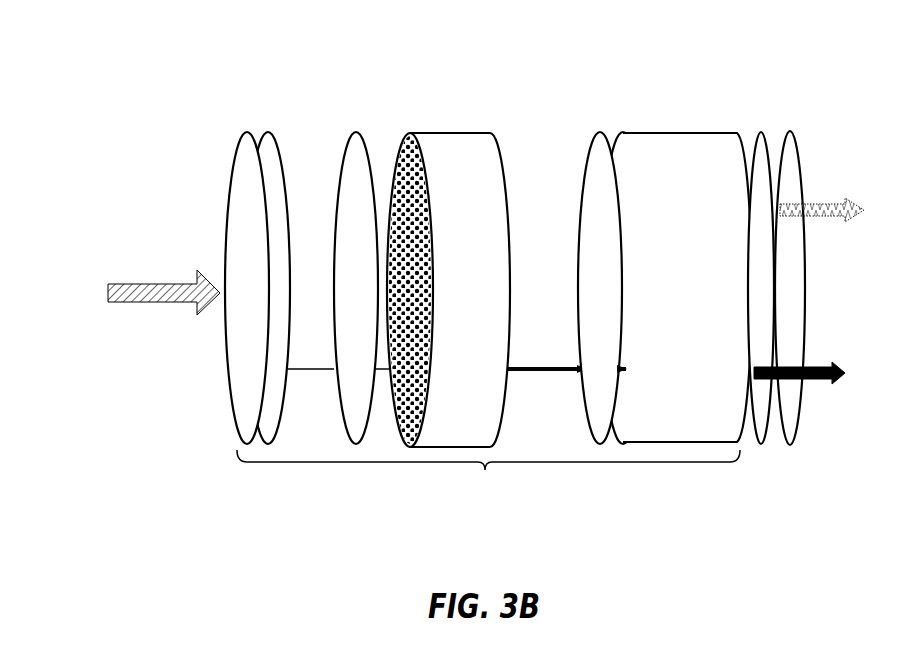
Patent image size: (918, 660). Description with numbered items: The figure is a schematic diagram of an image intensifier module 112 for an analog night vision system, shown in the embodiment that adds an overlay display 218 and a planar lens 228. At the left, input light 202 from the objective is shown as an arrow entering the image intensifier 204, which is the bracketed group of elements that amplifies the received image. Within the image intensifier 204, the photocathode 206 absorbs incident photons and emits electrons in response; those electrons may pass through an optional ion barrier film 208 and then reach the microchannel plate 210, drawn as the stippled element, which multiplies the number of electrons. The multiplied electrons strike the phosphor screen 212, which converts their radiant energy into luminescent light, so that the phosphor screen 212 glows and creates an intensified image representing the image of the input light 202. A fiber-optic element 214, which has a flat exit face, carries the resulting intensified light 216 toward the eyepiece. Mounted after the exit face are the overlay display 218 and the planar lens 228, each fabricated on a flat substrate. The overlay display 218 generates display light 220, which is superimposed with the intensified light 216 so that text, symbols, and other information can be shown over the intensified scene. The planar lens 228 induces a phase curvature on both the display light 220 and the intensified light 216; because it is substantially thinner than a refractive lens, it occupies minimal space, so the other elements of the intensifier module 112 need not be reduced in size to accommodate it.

The image intensifier module 112 is at (258, 61).
The input light 202 is at (134, 279).
The image intensifier 204 is at (498, 510).
The photocathode 206 is at (229, 217).
The ion barrier film 208 is at (340, 162).
The microchannel plate 210 is at (427, 137).
The phosphor screen 212 is at (583, 170).
The fiber-optic element 214 is at (716, 226).
The intensified light 216 is at (828, 364).
The overlay display 218 is at (750, 146).
The display light 220 is at (828, 199).
The planar lens 228 is at (766, 446).